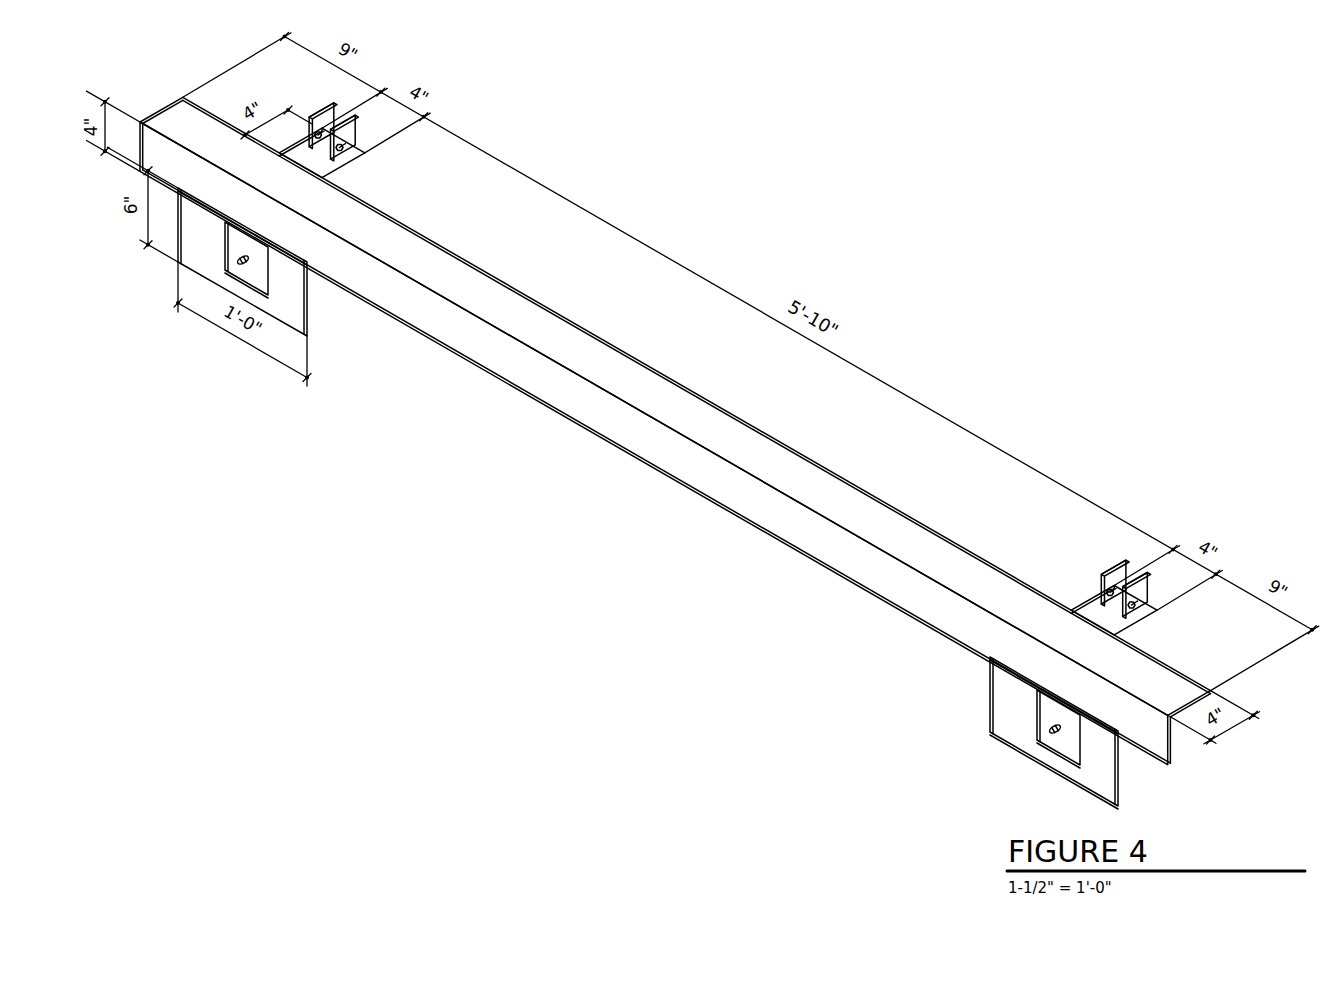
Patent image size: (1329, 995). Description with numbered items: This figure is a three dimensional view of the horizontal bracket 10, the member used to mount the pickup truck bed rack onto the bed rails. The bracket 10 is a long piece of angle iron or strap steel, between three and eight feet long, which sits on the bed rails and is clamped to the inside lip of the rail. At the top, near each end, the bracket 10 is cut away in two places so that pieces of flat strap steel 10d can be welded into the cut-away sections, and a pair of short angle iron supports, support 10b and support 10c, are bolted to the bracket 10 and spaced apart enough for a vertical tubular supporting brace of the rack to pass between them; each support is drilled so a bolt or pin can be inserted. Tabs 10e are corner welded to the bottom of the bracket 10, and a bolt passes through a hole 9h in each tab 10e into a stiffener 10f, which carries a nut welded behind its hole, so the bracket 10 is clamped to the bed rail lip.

The horizontal bracket 10 is at (675, 430).
The support 10b is at (352, 144).
The support 10c is at (1087, 559).
The flat strap steel piece 10d is at (1139, 621).
The tab 10e is at (990, 742).
The stiffener 10f is at (1035, 744).
The hole 9h is at (961, 730).